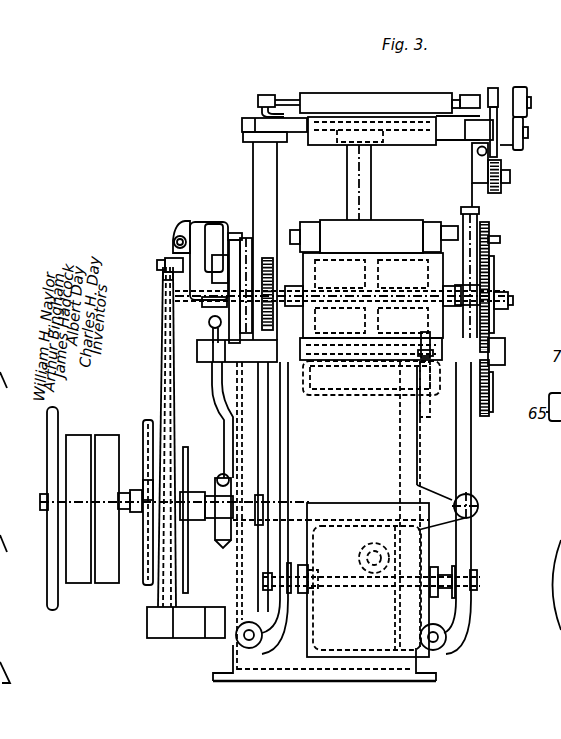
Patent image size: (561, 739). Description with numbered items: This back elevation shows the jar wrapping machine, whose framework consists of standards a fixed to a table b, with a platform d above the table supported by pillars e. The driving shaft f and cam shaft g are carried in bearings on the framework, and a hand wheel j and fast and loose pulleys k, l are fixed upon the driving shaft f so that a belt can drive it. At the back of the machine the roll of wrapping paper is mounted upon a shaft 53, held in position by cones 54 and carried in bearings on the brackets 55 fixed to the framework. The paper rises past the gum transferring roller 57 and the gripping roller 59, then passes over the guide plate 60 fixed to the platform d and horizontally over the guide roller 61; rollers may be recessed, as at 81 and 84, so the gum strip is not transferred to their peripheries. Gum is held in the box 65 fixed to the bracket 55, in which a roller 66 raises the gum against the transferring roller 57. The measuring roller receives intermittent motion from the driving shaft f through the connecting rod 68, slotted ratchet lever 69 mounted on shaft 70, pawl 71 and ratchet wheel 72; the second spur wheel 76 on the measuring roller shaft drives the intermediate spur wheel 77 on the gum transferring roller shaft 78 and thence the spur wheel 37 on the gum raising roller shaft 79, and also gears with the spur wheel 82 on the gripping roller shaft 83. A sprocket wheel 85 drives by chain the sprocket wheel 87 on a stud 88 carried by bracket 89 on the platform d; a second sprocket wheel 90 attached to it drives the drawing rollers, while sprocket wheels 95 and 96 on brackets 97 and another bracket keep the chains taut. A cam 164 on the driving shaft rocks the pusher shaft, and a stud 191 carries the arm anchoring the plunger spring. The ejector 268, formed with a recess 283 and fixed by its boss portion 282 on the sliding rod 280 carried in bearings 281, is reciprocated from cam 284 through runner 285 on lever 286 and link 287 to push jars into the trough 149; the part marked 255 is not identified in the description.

The guide roller 61 is at (364, 94).
The platform d is at (242, 122).
The pillars e is at (265, 241).
The guide plate 60 is at (331, 145).
The gripping roller 59 is at (386, 220).
The recess 81 is at (314, 222).
The recess 84 is at (432, 222).
The gum transferring roller 57 is at (430, 330).
The gum transferring roller shaft 78 is at (352, 360).
The gum box 65 is at (371, 384).
The gum raising roller shaft 79 is at (385, 382).
The gum raising roller 66 is at (427, 400).
The bracket 89 is at (493, 88).
The sprocket wheel 96 is at (518, 92).
The stud 88 is at (524, 133).
The second sprocket wheel 90 is at (517, 147).
The sprocket wheel 87 is at (487, 153).
The bracket 97 is at (475, 160).
The sprocket wheel 95 is at (501, 192).
The spur wheel 82 is at (486, 226).
The gripping roller shaft 83 is at (500, 240).
The second spur wheel 76 is at (490, 256).
The sprocket wheel 85 is at (495, 279).
The intermediate spur wheel 77 is at (490, 366).
The spur wheel 37 is at (489, 410).
The shaft 70 is at (513, 301).
The table b is at (514, 343).
The recess 283 is at (203, 222).
The ejector 268 is at (222, 223).
The slotted ratchet lever 69 is at (235, 233).
The pawl 71 is at (247, 244).
The ratchet wheel 72 is at (251, 267).
The bearings 281 is at (183, 232).
The sliding rod 280 is at (174, 243).
The boss portion 282 is at (156, 266).
The link 287 is at (165, 282).
The trough 149 is at (207, 308).
The lever 286 is at (161, 345).
The stud 191 is at (147, 627).
The hand wheel j is at (46, 432).
The fast pulley k is at (78, 509).
The loose pulley l is at (107, 509).
The driving shaft f is at (40, 509).
The runner 285 is at (143, 487).
The cam 284 is at (147, 419).
The cam 164 is at (186, 446).
The connecting rod 68 is at (212, 392).
The standards a is at (237, 570).
The brackets 55 is at (289, 454).
The pivot 255 is at (479, 507).
The shaft 53 is at (349, 590).
The cam shaft g is at (360, 552).
The cones 54 is at (318, 598).